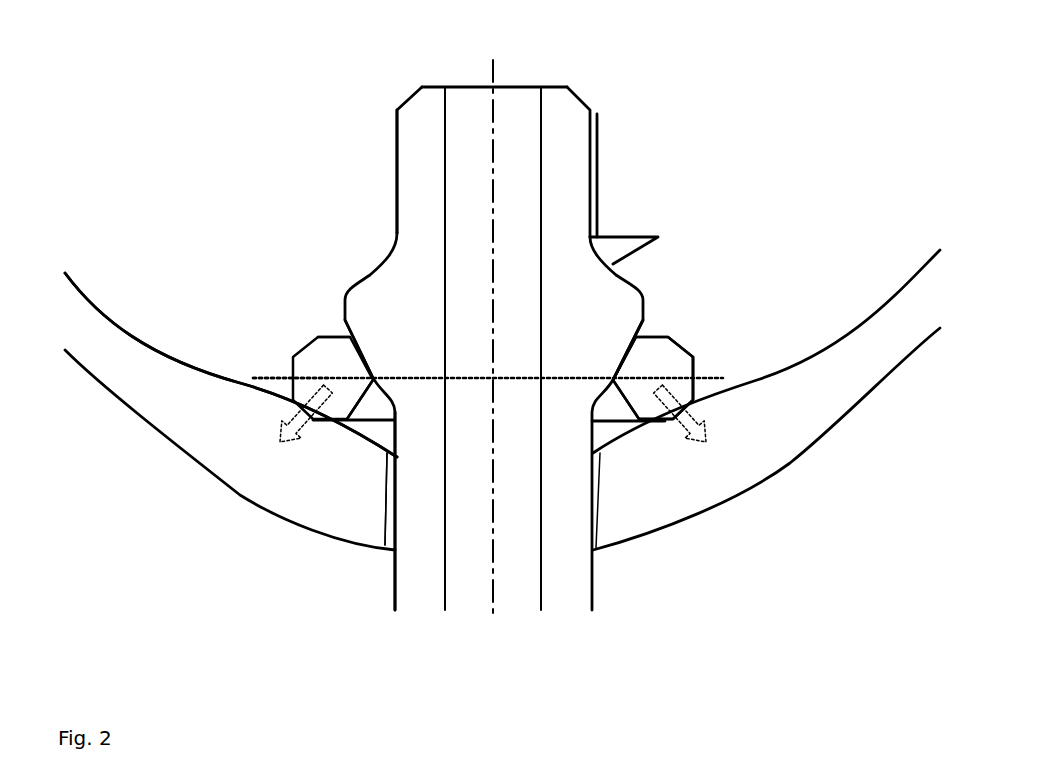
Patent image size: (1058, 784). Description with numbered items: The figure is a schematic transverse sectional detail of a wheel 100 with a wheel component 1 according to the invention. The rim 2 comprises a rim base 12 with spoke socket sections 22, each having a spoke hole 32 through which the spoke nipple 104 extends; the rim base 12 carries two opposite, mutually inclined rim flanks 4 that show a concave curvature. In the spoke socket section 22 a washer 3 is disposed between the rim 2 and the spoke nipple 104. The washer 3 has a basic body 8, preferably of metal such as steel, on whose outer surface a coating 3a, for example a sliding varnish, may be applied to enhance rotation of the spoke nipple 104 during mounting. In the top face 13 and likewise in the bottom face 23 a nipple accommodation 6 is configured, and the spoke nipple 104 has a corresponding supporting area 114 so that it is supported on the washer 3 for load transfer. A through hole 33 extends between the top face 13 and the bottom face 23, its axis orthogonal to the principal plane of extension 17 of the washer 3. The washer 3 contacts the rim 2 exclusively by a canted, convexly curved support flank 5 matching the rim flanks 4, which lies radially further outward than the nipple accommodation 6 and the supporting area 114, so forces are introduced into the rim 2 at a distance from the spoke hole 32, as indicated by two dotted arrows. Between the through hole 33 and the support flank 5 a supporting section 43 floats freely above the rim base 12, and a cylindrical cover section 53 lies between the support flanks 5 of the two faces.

The wheel component 1 is at (117, 75).
The wheel 100 is at (805, 135).
The spoke nipple 104 is at (397, 153).
The supporting area 114 is at (336, 337).
The top face 13 is at (652, 335).
The rim 2 is at (133, 421).
The rim flanks 4 is at (280, 393).
The rim base 12 is at (340, 490).
The spoke hole 32 is at (387, 517).
The supporting section 43 is at (623, 422).
The principal plane of extension 17 is at (400, 377).
The spoke socket sections 22 is at (283, 384).
The washer 3 is at (325, 363).
The nipple accommodation 6 is at (328, 348).
The through hole 33 is at (377, 395).
The coating 3a is at (690, 342).
The basic body 8 is at (663, 367).
The cylindrical cover section 53 is at (693, 367).
The bottom face 23 is at (657, 422).
The support flank 5 is at (683, 420).